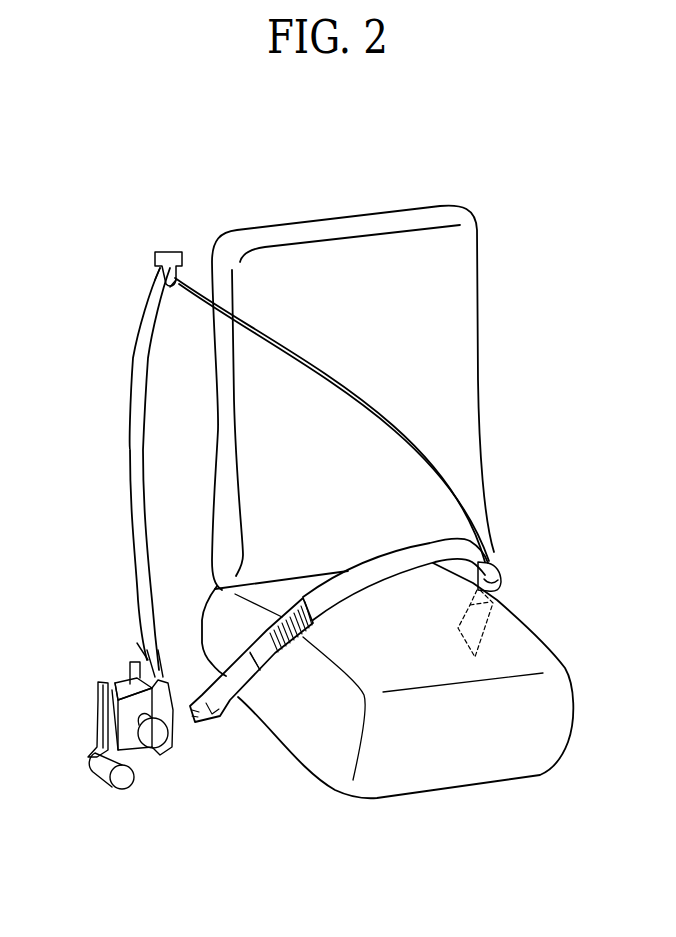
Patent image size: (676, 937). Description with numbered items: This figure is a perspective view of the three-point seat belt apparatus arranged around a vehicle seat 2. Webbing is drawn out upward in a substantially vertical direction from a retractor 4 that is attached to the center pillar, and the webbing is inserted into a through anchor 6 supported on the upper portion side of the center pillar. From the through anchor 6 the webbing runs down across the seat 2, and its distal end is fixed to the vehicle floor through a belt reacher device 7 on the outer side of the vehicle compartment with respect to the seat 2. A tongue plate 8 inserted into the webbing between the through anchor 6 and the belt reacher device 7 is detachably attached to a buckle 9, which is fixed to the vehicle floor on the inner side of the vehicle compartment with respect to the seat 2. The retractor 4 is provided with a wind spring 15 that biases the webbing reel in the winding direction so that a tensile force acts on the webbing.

The seat 2 is at (333, 228).
The retractor 4 is at (84, 660).
The through anchor 6 is at (165, 252).
The belt reacher device 7 is at (231, 707).
The tongue plate 8 is at (483, 548).
The buckle 9 is at (498, 585).
The wind spring 15 is at (402, 560).